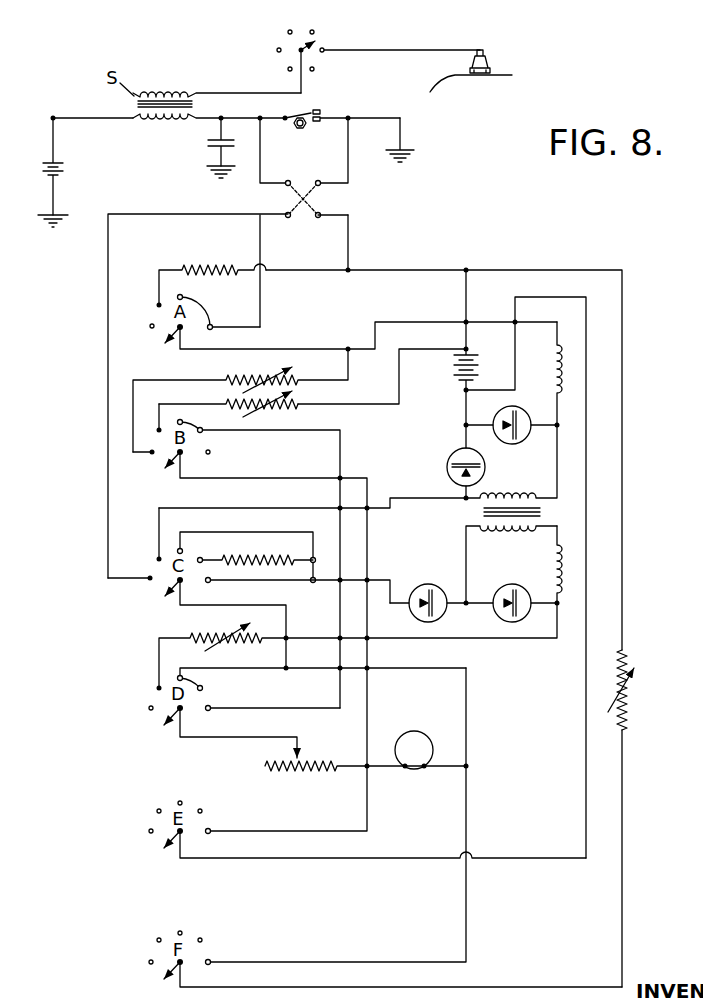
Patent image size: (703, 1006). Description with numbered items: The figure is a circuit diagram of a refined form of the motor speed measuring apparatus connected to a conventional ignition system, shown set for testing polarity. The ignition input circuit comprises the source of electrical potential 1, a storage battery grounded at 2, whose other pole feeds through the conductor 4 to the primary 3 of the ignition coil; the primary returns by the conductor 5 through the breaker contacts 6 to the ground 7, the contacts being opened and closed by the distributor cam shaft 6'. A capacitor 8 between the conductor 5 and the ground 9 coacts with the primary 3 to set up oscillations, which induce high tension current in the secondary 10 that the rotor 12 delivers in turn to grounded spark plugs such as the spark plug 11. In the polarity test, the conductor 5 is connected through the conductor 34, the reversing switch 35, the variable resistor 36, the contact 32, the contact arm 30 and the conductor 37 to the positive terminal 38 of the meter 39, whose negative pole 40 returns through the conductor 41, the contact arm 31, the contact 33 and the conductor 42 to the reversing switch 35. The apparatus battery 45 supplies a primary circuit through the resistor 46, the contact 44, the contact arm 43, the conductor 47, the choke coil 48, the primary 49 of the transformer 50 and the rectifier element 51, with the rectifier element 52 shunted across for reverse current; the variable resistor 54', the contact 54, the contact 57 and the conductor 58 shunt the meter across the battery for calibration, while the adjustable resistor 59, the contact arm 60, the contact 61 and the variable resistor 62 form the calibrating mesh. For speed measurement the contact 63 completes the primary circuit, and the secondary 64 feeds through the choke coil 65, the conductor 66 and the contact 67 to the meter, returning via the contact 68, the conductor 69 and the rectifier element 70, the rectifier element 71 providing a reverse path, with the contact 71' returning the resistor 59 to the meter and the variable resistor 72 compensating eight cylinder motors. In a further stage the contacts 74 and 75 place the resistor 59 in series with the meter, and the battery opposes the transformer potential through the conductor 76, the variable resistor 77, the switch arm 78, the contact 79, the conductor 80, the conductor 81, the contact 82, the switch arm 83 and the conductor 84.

The source of electrical potential 1 is at (70, 171).
The ground 2 is at (45, 224).
The primary 3 is at (171, 125).
The conductor 4 is at (102, 121).
The conductor 5 is at (242, 117).
The breaker contacts 6 is at (342, 104).
The distributor cam shaft 6' is at (303, 136).
The ground 7 is at (418, 157).
The capacitor 8 is at (207, 143).
The ground 9 is at (213, 175).
The secondary 10 is at (166, 87).
The spark plug 11 is at (489, 61).
The rotor 12 is at (321, 43).
The contact arm 30 is at (165, 472).
The contact arm 31 is at (158, 598).
The contact 32 is at (150, 455).
The contact 33 is at (148, 581).
The conductor 34 is at (262, 165).
The reversing switch 35 is at (306, 217).
The variable resistor 36 is at (242, 379).
The conductor 37 is at (365, 477).
The positive terminal 38 is at (404, 770).
The meter 39 is at (414, 733).
The negative pole 40 is at (426, 770).
The conductor 41 is at (469, 710).
The conductor 42 is at (352, 186).
The contact arm 43 is at (157, 345).
The contact 44 is at (156, 305).
The battery 45 is at (452, 370).
The resistor 46 is at (202, 262).
The conductor 47 is at (405, 321).
The choke coil 48 is at (552, 370).
The primary 49 is at (508, 495).
The transformer 50 is at (548, 513).
The rectifier element 51 is at (450, 459).
The rectifier element 52 is at (520, 441).
The contact 54 is at (301, 393).
The variable resistor 54' is at (246, 399).
The contact 57 is at (156, 557).
The conductor 58 is at (289, 507).
The adjustable resistor 59 is at (302, 772).
The contact arm 60 is at (162, 731).
The contact 61 is at (156, 688).
The variable resistor 62 is at (214, 626).
The contact 63 is at (184, 297).
The secondary 64 is at (507, 530).
The choke coil 65 is at (554, 555).
The conductor 66 is at (507, 642).
The contact 67 is at (194, 424).
The contact 68 is at (182, 548).
The conductor 69 is at (381, 580).
The rectifier element 70 is at (428, 584).
The rectifier element 71 is at (508, 587).
The contact 71' is at (322, 678).
The variable resistor 72 is at (263, 556).
The contact 74 is at (214, 582).
The contact 75 is at (216, 706).
The conductor 76 is at (624, 535).
The variable resistor 77 is at (627, 704).
The switch arm 78 is at (167, 989).
The contact 79 is at (212, 960).
The conductor 80 is at (469, 920).
The conductor 81 is at (369, 814).
The contact 82 is at (212, 828).
The switch arm 83 is at (166, 858).
The conductor 84 is at (524, 857).